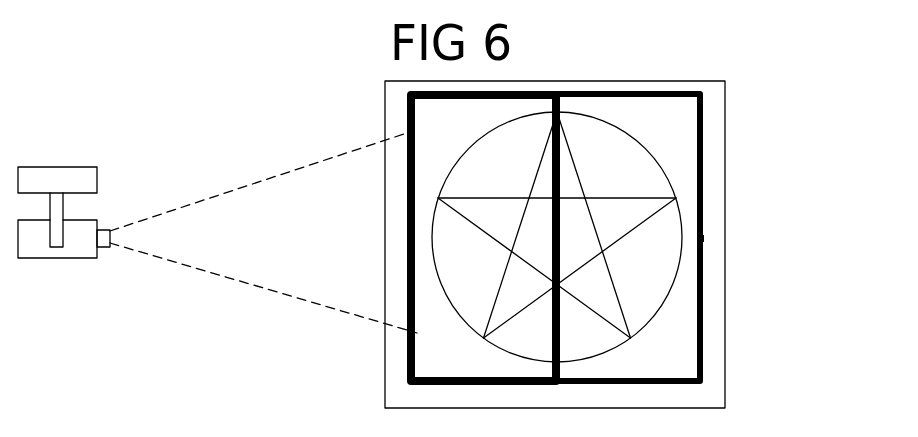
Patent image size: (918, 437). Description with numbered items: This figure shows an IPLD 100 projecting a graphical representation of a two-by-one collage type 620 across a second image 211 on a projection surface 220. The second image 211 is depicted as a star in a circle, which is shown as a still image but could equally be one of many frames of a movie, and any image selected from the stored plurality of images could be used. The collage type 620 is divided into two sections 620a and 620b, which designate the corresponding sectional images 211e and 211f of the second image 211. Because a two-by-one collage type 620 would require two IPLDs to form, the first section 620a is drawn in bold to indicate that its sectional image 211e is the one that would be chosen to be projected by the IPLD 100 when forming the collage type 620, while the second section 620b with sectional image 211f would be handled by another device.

The IPLD 100 is at (73, 262).
The second image 211 is at (640, 192).
The sectional image 211e is at (501, 145).
The sectional image 211f is at (668, 145).
The projection surface 220 is at (737, 148).
The 2×1 collage type 620 is at (548, 237).
The section of the collage type 620a is at (398, 183).
The section of the collage type 620b is at (708, 172).